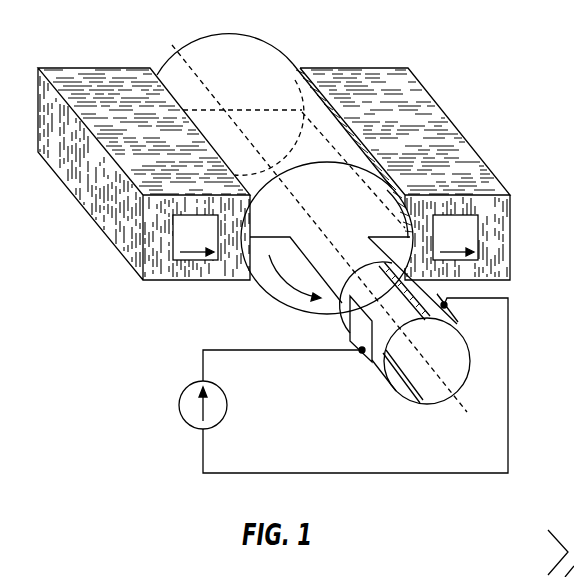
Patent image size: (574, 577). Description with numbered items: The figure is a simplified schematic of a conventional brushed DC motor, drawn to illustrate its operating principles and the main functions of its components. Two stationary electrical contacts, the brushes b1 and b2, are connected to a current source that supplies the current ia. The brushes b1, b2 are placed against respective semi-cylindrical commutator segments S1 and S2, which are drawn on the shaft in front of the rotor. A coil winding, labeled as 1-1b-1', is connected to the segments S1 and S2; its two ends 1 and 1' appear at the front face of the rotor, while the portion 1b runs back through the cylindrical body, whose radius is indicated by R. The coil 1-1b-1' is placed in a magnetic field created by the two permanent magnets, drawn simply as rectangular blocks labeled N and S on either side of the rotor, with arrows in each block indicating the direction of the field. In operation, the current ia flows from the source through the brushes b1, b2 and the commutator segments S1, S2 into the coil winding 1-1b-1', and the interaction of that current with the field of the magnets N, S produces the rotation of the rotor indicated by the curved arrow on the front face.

The coil winding 1 is at (327, 189).
The coil winding 1' is at (404, 266).
The coil winding 1b is at (319, 228).
The rotor radius R is at (245, 35).
The permanent magnet N is at (144, 174).
The permanent magnet S is at (405, 174).
The commutator segment S1 is at (385, 326).
The commutator segment S2 is at (426, 361).
The brush b1 is at (355, 350).
The brush b2 is at (468, 319).
The current ia is at (332, 385).